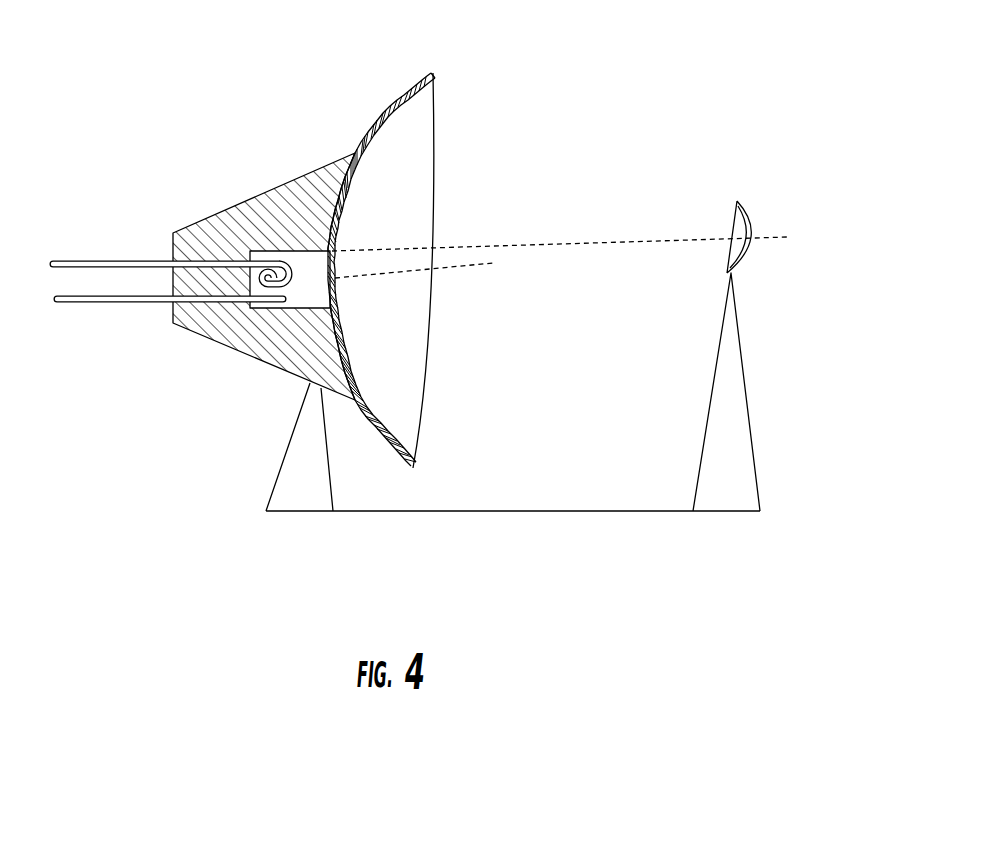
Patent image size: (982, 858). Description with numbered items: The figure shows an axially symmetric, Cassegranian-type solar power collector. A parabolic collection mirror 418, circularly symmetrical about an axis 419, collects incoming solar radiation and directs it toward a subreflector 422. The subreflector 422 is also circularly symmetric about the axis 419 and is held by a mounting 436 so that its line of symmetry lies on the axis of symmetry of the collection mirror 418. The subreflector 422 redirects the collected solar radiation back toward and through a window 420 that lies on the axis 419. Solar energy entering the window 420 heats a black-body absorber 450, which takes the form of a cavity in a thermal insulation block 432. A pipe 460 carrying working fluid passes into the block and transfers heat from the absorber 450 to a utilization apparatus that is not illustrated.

The parabolic collection mirror 418 is at (418, 70).
The axis 419 is at (567, 248).
The window 420 is at (337, 296).
The subreflector 422 is at (750, 210).
The thermal insulation block 432 is at (259, 194).
The mounting 436 is at (312, 505).
The black-body absorber 450 is at (293, 298).
The pipe 460 is at (142, 305).